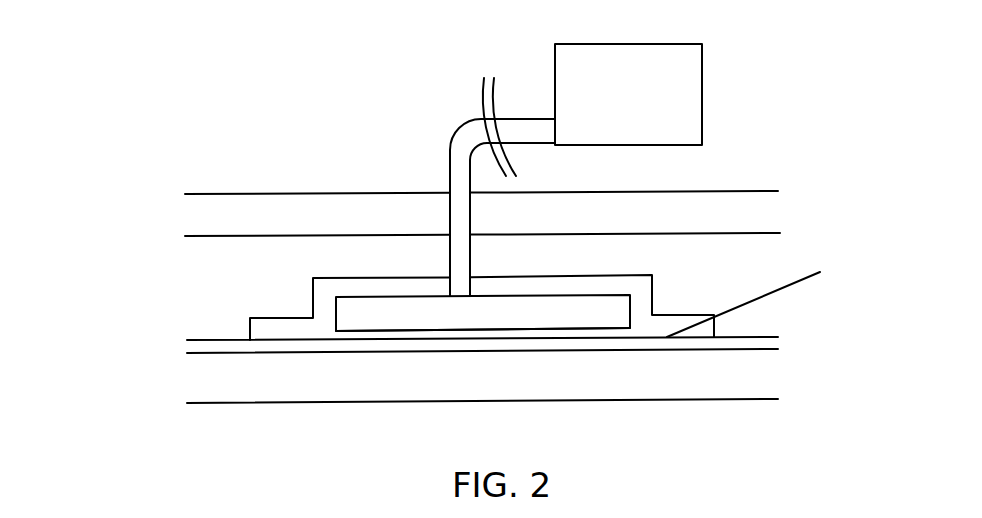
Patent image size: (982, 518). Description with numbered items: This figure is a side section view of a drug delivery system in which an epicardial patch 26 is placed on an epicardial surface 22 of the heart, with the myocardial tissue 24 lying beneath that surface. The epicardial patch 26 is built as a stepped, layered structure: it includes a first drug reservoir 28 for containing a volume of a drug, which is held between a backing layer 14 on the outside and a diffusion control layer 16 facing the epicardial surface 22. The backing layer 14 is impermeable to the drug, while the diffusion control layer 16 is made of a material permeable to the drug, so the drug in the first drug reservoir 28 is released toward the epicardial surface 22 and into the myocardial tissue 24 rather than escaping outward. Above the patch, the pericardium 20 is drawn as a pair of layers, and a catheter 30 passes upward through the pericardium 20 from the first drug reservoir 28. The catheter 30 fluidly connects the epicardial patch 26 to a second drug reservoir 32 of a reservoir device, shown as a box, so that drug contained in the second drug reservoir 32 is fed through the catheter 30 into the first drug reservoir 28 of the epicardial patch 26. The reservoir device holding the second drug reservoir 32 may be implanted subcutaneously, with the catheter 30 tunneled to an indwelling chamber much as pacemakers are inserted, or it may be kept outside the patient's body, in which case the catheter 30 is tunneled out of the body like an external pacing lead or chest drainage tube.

The backing layer 14 is at (652, 274).
The diffusion control layer 16 is at (432, 333).
The pericardium 20 is at (683, 190).
The epicardial surface 22 is at (237, 340).
The myocardial tissue 24 is at (285, 385).
The epicardial patch 26 is at (283, 279).
The first drug reservoir 28 is at (400, 307).
The catheter 30 is at (471, 123).
The second drug reservoir 32 is at (703, 55).